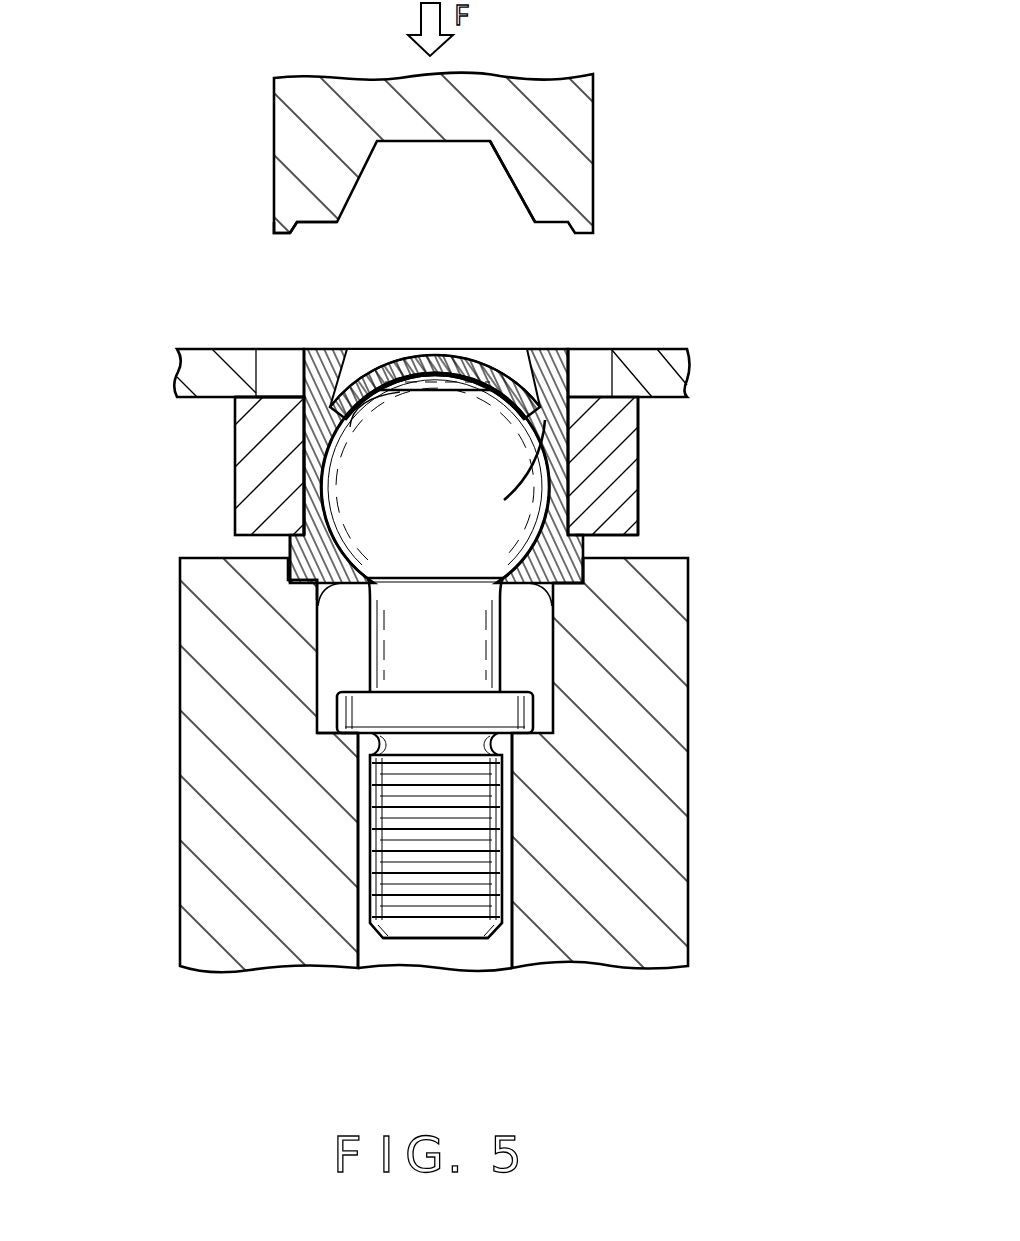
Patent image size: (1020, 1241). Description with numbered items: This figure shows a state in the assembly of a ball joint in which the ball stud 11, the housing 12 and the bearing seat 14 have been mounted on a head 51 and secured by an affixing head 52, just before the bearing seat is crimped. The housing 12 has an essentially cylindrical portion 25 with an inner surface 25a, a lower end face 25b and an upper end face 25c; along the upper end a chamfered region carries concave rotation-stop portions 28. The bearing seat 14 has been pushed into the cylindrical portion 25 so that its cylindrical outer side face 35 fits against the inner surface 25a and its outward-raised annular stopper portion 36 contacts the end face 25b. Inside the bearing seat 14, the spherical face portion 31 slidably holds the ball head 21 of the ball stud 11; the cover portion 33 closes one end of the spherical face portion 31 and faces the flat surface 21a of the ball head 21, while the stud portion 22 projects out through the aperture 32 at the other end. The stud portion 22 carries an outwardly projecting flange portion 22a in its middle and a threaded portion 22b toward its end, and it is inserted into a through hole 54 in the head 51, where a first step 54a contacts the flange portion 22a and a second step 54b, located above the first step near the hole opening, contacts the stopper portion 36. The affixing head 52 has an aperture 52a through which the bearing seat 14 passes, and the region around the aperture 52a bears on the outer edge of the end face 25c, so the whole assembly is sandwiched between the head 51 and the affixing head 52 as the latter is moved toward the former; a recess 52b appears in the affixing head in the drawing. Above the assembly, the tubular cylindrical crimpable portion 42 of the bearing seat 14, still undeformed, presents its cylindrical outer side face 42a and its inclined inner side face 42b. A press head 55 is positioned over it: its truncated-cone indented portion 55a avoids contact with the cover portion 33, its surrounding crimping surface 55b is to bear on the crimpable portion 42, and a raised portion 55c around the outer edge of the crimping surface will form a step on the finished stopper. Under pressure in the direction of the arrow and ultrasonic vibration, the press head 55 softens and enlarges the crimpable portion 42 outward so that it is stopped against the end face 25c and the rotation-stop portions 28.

The ball stud 11 is at (398, 1026).
The housing 12 is at (718, 481).
The bearing seat 14 is at (130, 628).
The ball head 21 is at (487, 427).
The flat surface 21a is at (530, 372).
The stud portion 22 is at (455, 930).
The flange portion 22a is at (540, 712).
The threaded portion 22b is at (487, 935).
The cylindrical portion 25 is at (640, 423).
The inner surface 25a is at (303, 433).
The end face 25b is at (622, 548).
The end face 25c is at (267, 349).
The rotation-stop portion 28 is at (285, 349).
The spherical face portion 31 is at (415, 388).
The aperture 32 is at (556, 610).
The cover portion 33 is at (452, 365).
The outer side face 35 is at (303, 478).
The annular stopper portion 36 is at (567, 568).
The cylindrical crimpable portion 42 is at (308, 352).
The outer side face 42a is at (575, 368).
The inner side face 42b is at (340, 351).
The head 51 is at (665, 840).
The affixing head 52 is at (673, 360).
The aperture 52a is at (623, 373).
The recess 52b is at (240, 400).
The through hole 54 is at (370, 945).
The first step 54a is at (317, 707).
The second step 54b is at (310, 590).
The press head 55 is at (597, 86).
The indented portion 55a is at (512, 190).
The crimping surface 55b is at (297, 226).
The raised portion 55c is at (274, 233).